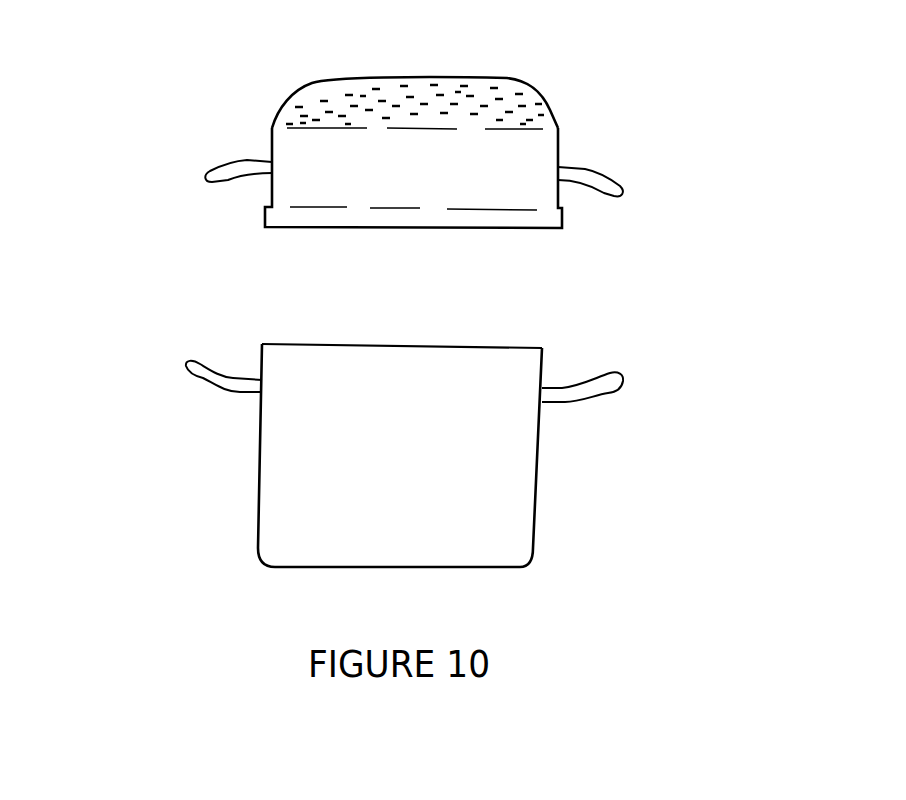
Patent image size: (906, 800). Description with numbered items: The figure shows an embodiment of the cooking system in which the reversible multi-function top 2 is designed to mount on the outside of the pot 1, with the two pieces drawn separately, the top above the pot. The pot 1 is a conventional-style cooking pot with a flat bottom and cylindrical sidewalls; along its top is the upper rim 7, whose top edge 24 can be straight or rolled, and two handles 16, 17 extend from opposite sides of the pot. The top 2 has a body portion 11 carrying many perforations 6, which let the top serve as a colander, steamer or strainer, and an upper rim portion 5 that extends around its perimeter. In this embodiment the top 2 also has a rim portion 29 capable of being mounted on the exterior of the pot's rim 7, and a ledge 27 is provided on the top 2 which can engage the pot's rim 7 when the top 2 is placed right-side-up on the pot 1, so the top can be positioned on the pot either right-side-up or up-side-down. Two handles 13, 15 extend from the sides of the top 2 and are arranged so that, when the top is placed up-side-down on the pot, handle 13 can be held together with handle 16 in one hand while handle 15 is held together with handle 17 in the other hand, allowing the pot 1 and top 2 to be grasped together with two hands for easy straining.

The pot 1 is at (421, 429).
The reversible multi-function top 2 is at (433, 155).
The upper rim portion 5 is at (428, 214).
The perforations 6 is at (513, 93).
The upper rim 7 is at (507, 356).
The body portion 11 is at (350, 69).
The handle 13 is at (628, 188).
The handle 15 is at (215, 176).
The handle 16 is at (625, 385).
The handle 17 is at (200, 373).
The top edge 24 is at (407, 344).
The ledge 27 is at (275, 120).
The rim portion 29 is at (383, 228).